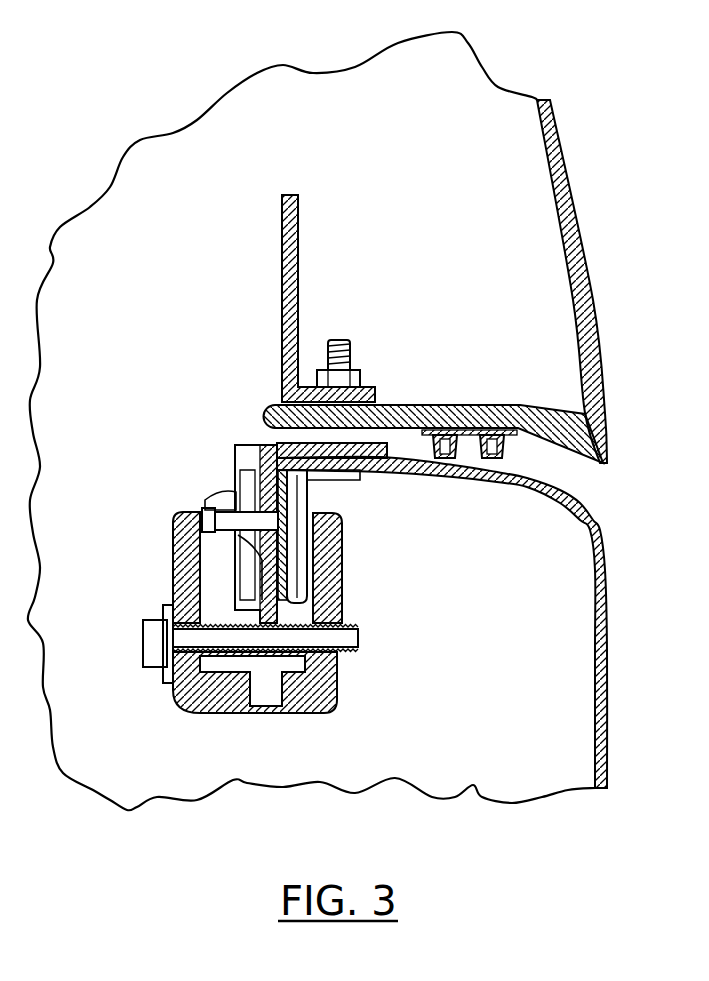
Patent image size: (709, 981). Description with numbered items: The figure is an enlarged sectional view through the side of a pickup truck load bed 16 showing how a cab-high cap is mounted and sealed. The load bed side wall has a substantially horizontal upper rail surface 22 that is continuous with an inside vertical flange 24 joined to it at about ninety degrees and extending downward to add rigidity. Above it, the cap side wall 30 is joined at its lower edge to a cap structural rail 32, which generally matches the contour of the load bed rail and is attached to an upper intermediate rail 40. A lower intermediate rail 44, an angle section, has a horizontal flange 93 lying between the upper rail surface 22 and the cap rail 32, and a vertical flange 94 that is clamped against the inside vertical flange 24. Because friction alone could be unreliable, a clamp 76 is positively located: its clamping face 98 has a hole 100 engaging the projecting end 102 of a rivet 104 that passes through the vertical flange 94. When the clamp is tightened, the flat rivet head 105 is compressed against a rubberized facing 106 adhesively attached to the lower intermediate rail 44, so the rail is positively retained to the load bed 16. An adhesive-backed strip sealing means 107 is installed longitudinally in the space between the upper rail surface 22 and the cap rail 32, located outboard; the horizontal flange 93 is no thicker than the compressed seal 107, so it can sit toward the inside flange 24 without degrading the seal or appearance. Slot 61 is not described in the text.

The load bed 16 is at (596, 633).
The upper rail surface 22 is at (528, 485).
The inside vertical flange 24 is at (318, 540).
The cap side wall 30 is at (563, 220).
The cap structural rail 32 is at (443, 413).
The upper intermediate rail 40 is at (288, 242).
The lower intermediate rail 44 is at (320, 612).
The slot 61 is at (245, 567).
The clamp 76 is at (310, 683).
The horizontal flange 93 is at (277, 444).
The vertical flange 94 is at (173, 600).
The clamping face 98 is at (232, 492).
The hole 100 is at (208, 510).
The projecting end 102 is at (232, 540).
The rivet 104 is at (252, 510).
The flat rivet head 105 is at (310, 522).
The rubberized facing 106 is at (308, 580).
The strip sealing means 107 is at (562, 463).